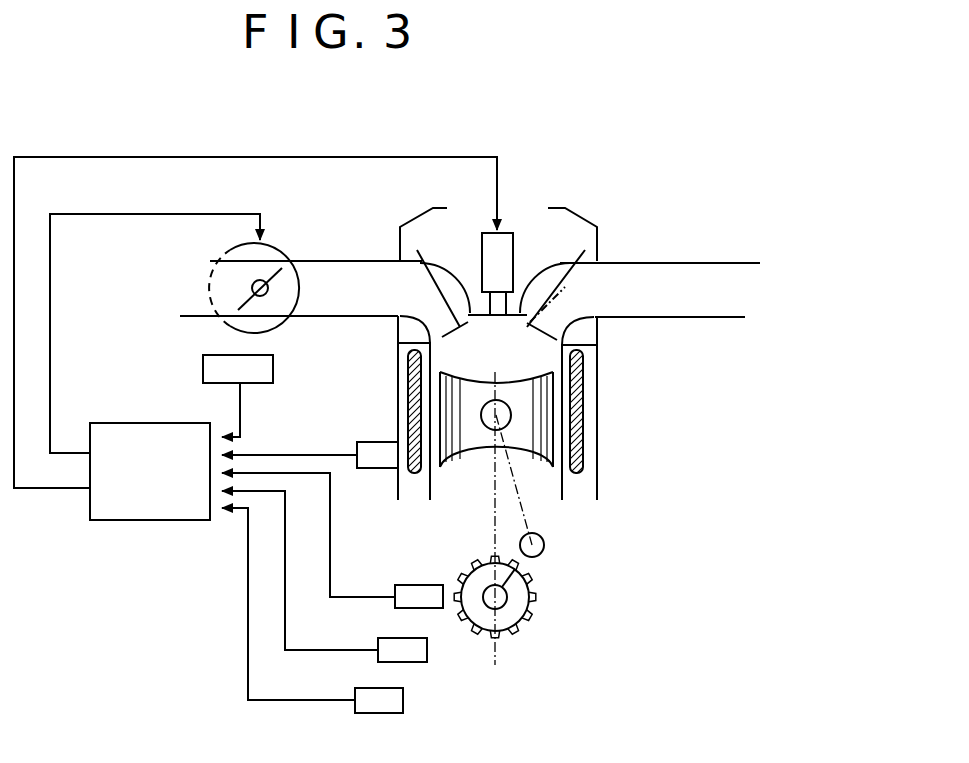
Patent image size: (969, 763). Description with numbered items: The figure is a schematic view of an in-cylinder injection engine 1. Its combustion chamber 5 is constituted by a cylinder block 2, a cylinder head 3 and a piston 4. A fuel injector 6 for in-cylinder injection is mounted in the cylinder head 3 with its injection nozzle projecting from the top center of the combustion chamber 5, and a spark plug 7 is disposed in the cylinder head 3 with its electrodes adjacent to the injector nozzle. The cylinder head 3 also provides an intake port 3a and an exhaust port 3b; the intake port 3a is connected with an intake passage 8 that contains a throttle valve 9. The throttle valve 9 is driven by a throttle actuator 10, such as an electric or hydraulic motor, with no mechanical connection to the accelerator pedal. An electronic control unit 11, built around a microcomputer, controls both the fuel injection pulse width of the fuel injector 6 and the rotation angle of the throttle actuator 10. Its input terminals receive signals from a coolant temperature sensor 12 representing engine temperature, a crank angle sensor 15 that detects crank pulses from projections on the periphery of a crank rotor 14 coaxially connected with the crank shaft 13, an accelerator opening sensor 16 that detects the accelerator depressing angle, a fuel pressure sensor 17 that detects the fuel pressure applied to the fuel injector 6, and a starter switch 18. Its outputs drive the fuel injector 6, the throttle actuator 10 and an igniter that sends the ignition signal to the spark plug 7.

The engine 1 is at (643, 384).
The cylinder block 2 is at (597, 465).
The cylinder head 3 is at (565, 208).
The intake port 3a is at (405, 298).
The exhaust port 3b is at (562, 272).
The piston 4 is at (540, 422).
The combustion chamber 5 is at (453, 363).
The fuel injector 6 is at (480, 245).
The spark plug 7 is at (565, 287).
The intake passage 8 is at (328, 262).
The throttle valve 9 is at (288, 318).
The throttle actuator 10 is at (230, 253).
The electronic control unit 11 is at (173, 524).
The coolant temperature sensor 12 is at (367, 442).
The crank shaft 13 is at (507, 597).
The crank rotor 14 is at (519, 631).
The crank angle sensor 15 is at (413, 585).
The accelerator opening sensor 16 is at (427, 652).
The fuel pressure sensor 17 is at (203, 366).
The starter switch 18 is at (403, 705).